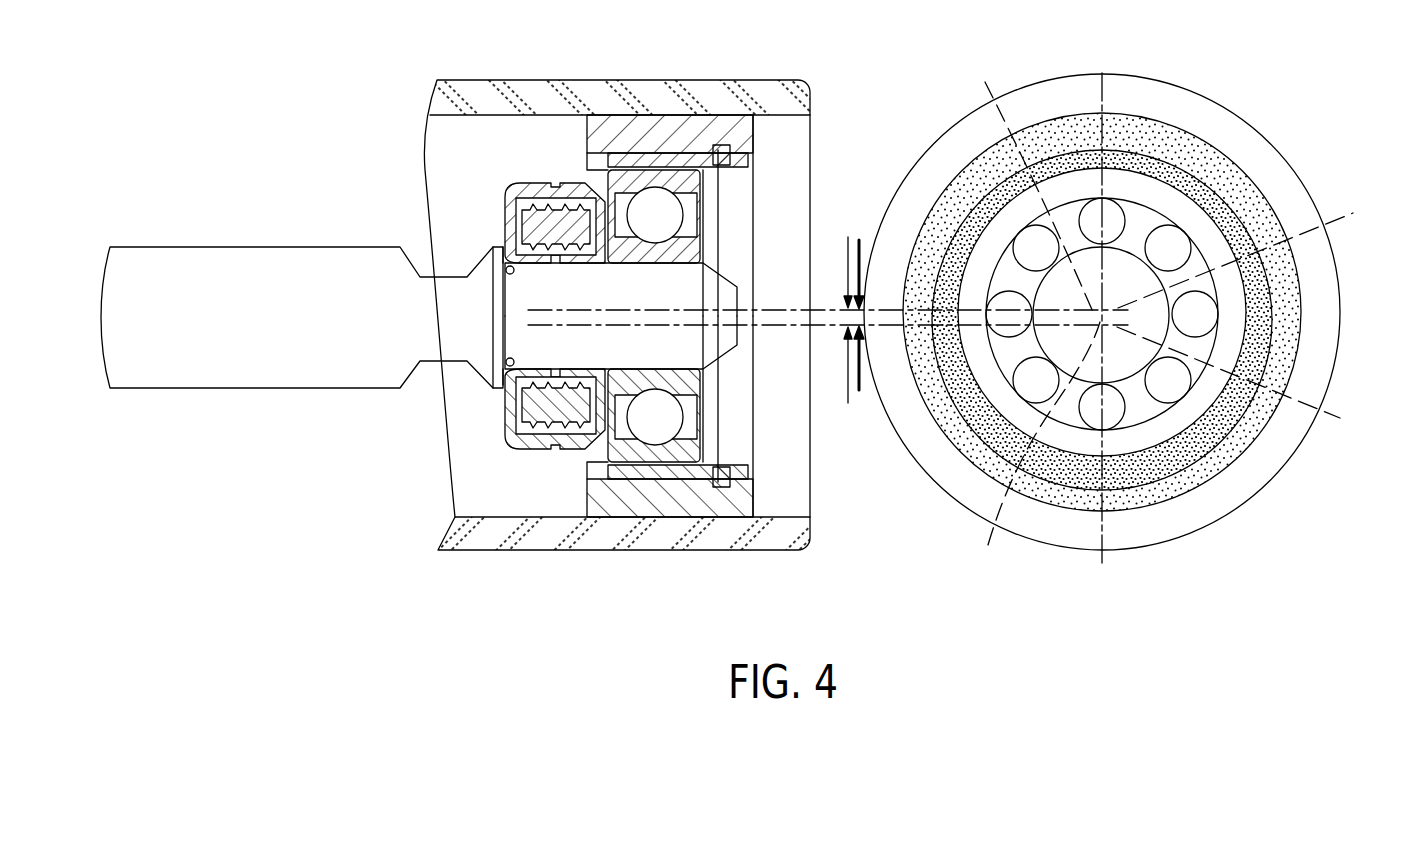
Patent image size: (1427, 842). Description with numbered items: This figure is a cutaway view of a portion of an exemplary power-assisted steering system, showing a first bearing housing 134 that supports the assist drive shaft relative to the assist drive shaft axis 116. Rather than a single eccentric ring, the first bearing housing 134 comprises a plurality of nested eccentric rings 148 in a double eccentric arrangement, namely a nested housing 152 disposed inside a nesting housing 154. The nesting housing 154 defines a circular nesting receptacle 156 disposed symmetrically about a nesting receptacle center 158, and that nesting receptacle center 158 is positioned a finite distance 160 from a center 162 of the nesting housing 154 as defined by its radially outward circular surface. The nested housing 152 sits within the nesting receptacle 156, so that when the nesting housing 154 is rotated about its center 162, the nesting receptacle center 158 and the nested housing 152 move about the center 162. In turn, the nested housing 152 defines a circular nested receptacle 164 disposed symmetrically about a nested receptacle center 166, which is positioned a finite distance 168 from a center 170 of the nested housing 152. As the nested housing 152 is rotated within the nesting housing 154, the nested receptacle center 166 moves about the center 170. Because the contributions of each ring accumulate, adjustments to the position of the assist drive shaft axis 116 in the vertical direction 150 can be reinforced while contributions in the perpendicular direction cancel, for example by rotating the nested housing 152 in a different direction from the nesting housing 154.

The assist drive shaft axis 116 is at (787, 306).
The first bearing housing 134 is at (1258, 437).
The nested eccentric rings 148 is at (1172, 463).
The vertical direction 150 is at (847, 377).
The nested housing 152 is at (1180, 177).
The nesting housing 154 is at (1260, 227).
The nesting receptacle 156 is at (1222, 205).
The nesting receptacle center 158 is at (1245, 380).
The finite distance 160 is at (846, 270).
The center of the nesting housing 162 is at (1032, 183).
The nested receptacle 164 is at (1126, 170).
The nested receptacle center 166 is at (1253, 255).
The finite distance 168 is at (858, 238).
The center of the nested housing 170 is at (1034, 446).